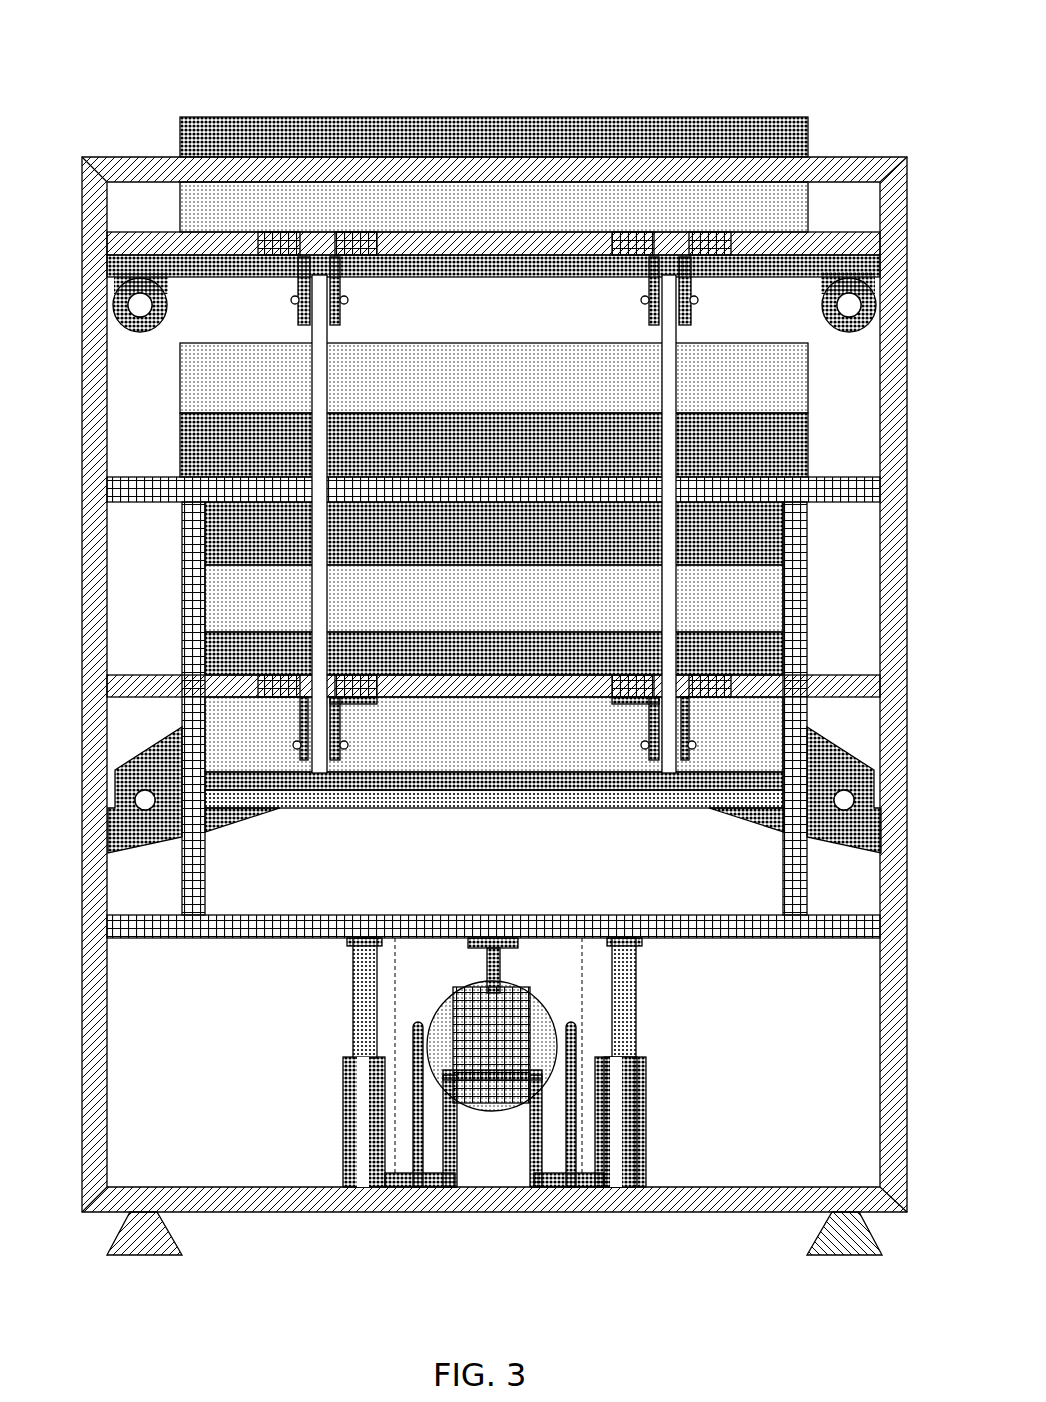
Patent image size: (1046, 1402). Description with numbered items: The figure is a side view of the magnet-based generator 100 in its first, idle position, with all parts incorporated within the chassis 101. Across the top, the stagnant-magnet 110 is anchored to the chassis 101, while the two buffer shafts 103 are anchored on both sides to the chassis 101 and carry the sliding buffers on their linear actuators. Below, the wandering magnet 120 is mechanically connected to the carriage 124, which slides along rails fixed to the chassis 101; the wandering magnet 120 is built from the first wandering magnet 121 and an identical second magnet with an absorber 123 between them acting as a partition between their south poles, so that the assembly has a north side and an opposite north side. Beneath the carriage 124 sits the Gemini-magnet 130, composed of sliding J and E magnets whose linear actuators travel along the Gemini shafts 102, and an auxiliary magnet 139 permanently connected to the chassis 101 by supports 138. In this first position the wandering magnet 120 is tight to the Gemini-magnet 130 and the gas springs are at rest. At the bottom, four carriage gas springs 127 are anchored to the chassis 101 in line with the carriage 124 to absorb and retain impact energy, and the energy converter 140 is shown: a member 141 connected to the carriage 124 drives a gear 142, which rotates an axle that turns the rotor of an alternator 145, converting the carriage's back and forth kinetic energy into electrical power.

The magnet-based generator 100 is at (855, 80).
The chassis 101 is at (858, 156).
The Gemini shafts 102 is at (150, 848).
The buffer shafts 103 is at (140, 320).
The stagnant-magnet 110 is at (200, 115).
The wandering magnet 120 is at (808, 476).
The first wandering magnet 121 is at (178, 416).
The absorber 123 is at (182, 590).
The carriage 124 is at (145, 505).
The carriage gas springs 127 is at (343, 1125).
The Gemini-magnet 130 is at (548, 740).
The supports 138 is at (260, 820).
The auxiliary magnet 139 is at (512, 798).
The energy converter 140 is at (635, 990).
The member 141 is at (485, 962).
The gear 142 is at (452, 992).
The alternator 145 is at (432, 1020).